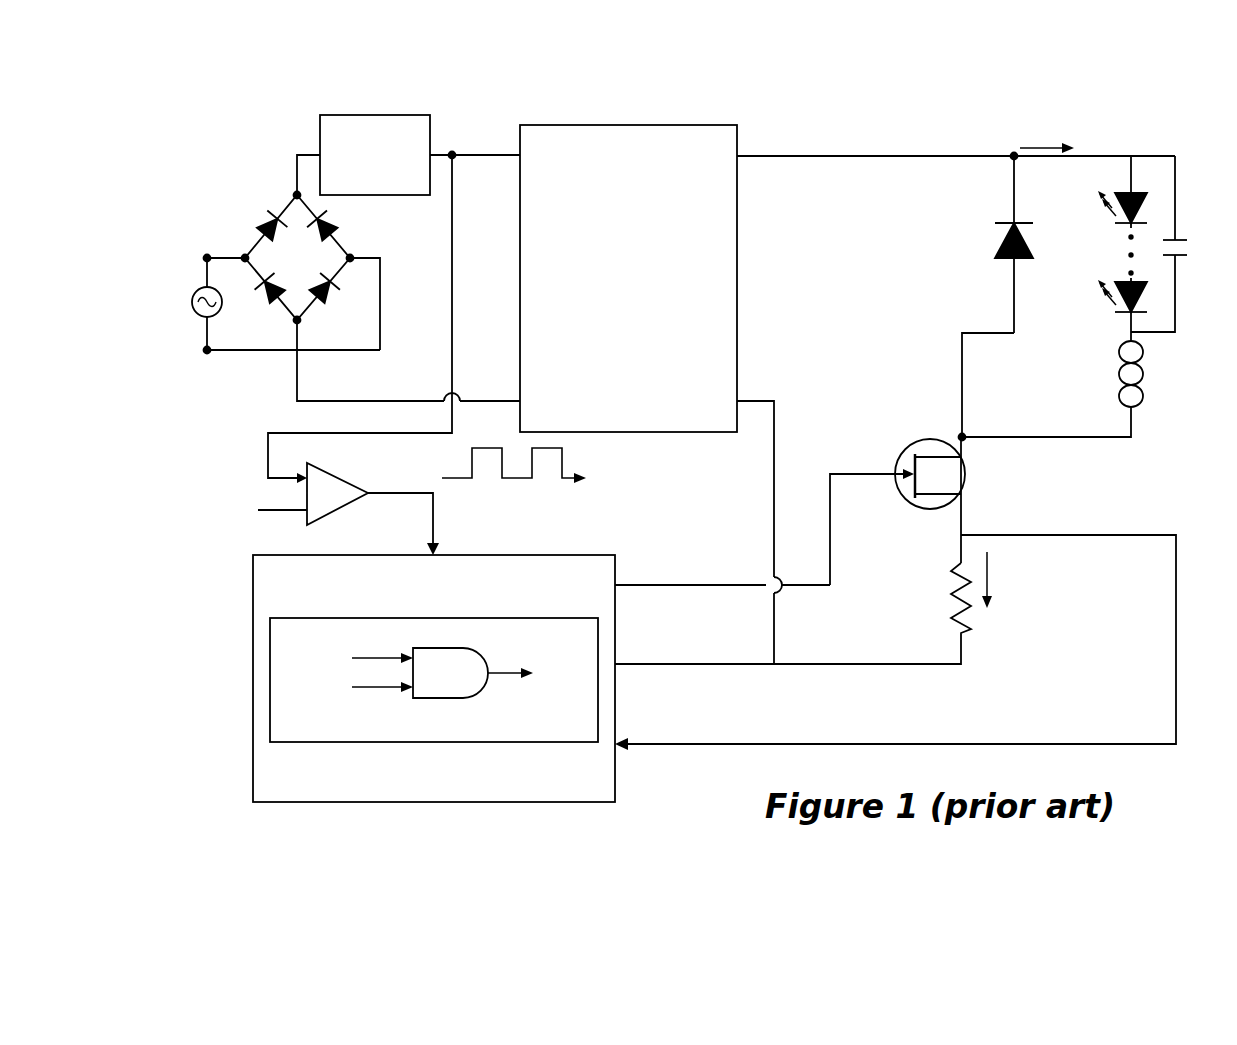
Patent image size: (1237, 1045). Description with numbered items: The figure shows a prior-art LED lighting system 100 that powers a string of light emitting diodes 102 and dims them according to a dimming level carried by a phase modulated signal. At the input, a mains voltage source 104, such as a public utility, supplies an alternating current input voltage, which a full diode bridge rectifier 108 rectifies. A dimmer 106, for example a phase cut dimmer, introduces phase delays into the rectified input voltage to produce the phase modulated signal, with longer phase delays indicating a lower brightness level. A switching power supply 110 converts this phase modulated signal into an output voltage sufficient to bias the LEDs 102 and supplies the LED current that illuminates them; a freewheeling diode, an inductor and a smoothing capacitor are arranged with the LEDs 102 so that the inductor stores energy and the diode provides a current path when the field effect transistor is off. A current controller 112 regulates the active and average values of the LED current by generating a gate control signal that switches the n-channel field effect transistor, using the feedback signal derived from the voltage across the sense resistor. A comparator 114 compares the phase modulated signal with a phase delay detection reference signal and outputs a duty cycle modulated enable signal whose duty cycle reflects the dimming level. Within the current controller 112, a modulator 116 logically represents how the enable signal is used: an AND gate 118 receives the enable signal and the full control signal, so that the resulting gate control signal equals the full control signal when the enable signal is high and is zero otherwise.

The LED lighting system 100 is at (900, 124).
The light emitting diodes (LEDs) 102 is at (1095, 246).
The voltage source 104 is at (197, 315).
The dimmer 106 is at (345, 114).
The full diode bridge rectifier 108 is at (363, 278).
The switching power supply 110 is at (637, 125).
The current controller 112 is at (495, 555).
The comparator 114 is at (325, 466).
The modulator 116 is at (360, 742).
The AND gate 118 is at (423, 698).